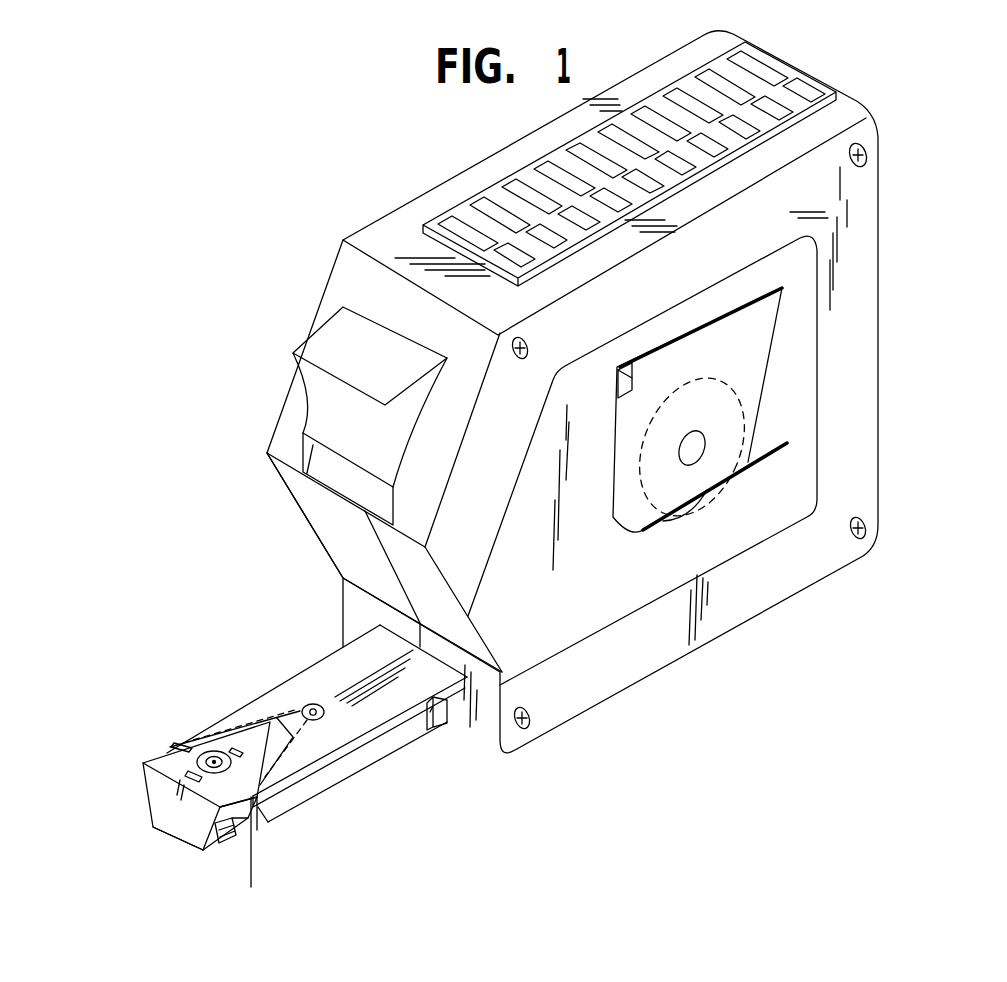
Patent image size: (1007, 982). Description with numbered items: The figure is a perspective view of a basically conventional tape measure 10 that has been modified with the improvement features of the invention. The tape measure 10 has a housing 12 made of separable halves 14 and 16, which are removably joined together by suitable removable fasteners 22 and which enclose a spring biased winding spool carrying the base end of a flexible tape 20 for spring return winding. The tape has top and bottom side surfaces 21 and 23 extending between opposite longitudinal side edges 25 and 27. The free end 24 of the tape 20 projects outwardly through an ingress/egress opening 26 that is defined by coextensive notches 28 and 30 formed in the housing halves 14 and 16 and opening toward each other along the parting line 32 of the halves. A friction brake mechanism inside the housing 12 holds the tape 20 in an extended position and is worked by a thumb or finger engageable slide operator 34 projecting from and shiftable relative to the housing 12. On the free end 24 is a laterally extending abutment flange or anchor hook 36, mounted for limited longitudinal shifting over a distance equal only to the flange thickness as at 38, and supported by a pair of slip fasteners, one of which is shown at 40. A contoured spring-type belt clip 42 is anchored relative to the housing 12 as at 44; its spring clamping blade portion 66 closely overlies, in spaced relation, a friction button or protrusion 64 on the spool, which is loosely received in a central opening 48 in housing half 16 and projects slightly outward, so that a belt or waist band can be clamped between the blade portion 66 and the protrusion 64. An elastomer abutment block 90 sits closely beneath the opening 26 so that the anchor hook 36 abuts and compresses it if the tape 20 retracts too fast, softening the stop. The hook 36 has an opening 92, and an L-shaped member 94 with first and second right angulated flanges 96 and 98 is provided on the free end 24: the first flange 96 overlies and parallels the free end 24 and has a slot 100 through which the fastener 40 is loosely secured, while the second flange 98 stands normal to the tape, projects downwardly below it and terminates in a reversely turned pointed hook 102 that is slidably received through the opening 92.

The tape measure 10 is at (885, 263).
The housing 12 is at (286, 490).
The housing half 14 is at (355, 594).
The housing half 16 is at (560, 713).
The flexible tape 20 is at (410, 712).
The top side surface 21 is at (399, 737).
The removable fasteners 22 is at (868, 163).
The bottom side surface 23 is at (340, 757).
The free end 24 is at (310, 770).
The longitudinal side edge 25 is at (267, 693).
The ingress/egress opening 26 is at (372, 627).
The longitudinal side edge 27 is at (361, 735).
The notch 28 is at (380, 623).
The notch 30 is at (440, 660).
The parting line 32 is at (357, 513).
The slide operator 34 is at (330, 340).
The abutment flange or anchor hook 36 is at (237, 845).
The thickness of the flange 38 is at (255, 858).
The slip fastener 40 is at (207, 757).
The belt clip 42 is at (767, 340).
The anchor point of belt clip 44 is at (642, 363).
The central opening 48 is at (673, 517).
The friction button or protrusion 64 is at (690, 507).
The spring clamping blade portion 66 is at (753, 435).
The elastomer abutment block 90 is at (432, 722).
The opening 92 is at (214, 832).
The L-shaped member 94 is at (155, 783).
The first flange 96 is at (163, 765).
The second flange 98 is at (163, 803).
The slot 100 is at (232, 750).
The reversely turned pointed hook 102 is at (236, 827).